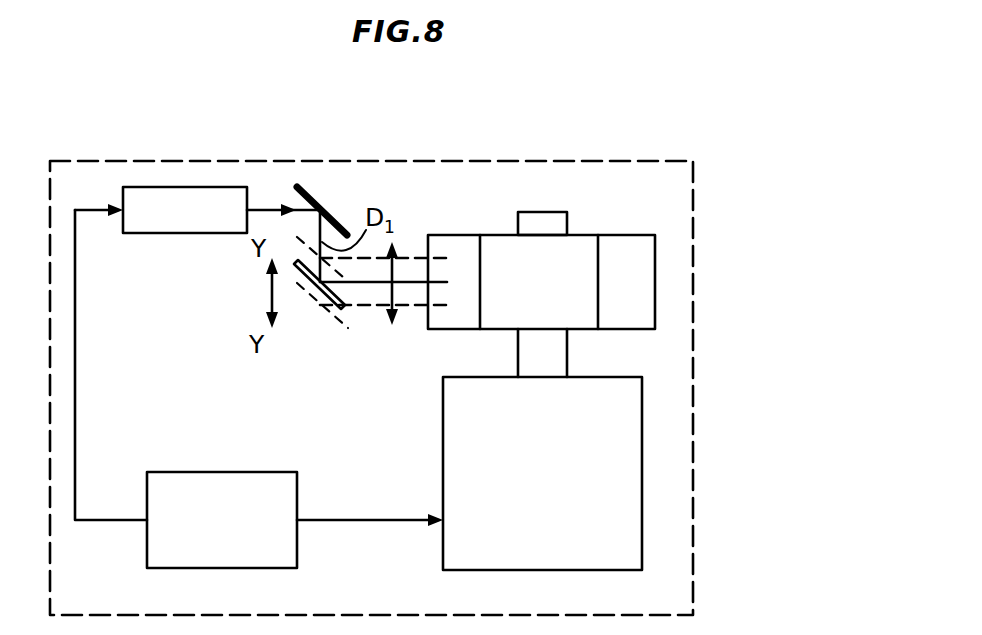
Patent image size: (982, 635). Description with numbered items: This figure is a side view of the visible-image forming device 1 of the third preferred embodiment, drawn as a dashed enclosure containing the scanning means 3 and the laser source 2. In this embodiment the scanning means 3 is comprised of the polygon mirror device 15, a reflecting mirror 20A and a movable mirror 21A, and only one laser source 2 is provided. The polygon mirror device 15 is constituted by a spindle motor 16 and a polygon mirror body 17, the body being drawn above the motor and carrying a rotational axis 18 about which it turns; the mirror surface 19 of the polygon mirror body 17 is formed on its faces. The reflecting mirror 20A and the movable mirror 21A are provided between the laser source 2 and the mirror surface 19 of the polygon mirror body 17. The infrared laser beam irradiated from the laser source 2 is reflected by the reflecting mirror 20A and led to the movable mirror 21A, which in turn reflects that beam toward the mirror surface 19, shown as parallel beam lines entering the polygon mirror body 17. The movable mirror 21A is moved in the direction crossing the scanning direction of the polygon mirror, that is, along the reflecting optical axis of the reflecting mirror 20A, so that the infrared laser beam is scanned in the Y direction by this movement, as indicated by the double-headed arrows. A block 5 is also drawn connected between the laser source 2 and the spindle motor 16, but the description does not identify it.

The visible-image forming device 1 is at (316, 160).
The laser source 2 is at (187, 226).
The control circuit 5 is at (256, 492).
The polygon mirror device 15 is at (784, 303).
The scanning means 3 is at (606, 344).
The spindle motor 16 is at (643, 412).
The polygon mirror body 17 is at (672, 290).
The rotational axis 18 is at (537, 222).
The mirror surface 19 is at (461, 246).
The reflecting mirror 20A is at (323, 204).
The movable mirror 21A is at (318, 304).